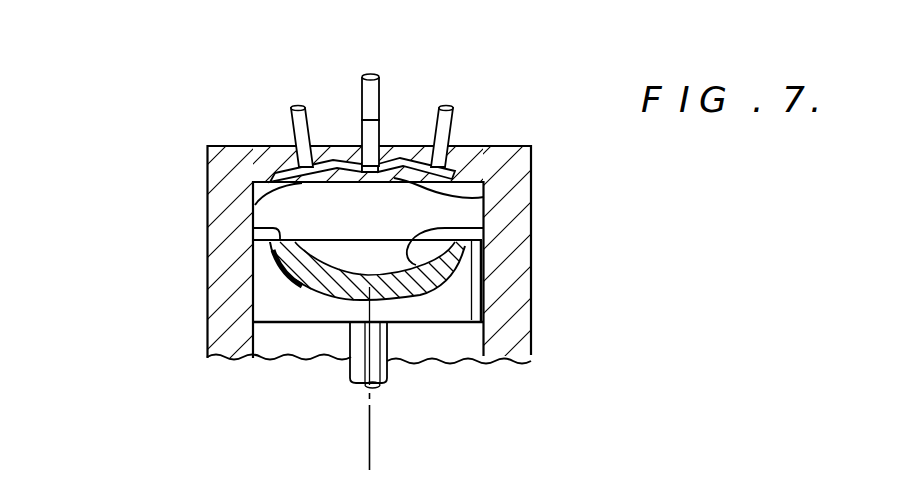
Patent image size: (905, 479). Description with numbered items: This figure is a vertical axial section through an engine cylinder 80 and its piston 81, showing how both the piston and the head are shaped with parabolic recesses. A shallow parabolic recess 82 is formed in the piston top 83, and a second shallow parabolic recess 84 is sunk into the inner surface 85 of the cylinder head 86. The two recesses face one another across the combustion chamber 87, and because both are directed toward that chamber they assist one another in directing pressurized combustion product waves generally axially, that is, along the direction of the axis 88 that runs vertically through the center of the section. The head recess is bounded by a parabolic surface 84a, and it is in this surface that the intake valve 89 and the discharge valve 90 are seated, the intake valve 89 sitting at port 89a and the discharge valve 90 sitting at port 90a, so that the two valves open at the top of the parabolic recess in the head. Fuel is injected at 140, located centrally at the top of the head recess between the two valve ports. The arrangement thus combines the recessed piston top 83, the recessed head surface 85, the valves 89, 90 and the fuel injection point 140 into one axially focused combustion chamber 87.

The cylinder 80 is at (206, 283).
The piston 81 is at (314, 314).
The shallow parabolic recess 82 is at (484, 229).
The piston top 83 is at (254, 224).
The shallow parabolic recess 84 is at (400, 185).
The parabolic surface 84a is at (381, 163).
The inner surface 85 is at (256, 195).
The cylinder head 86 is at (264, 146).
The combustion chamber 87 is at (367, 221).
The axis 88 is at (372, 440).
The intake valve 89 is at (256, 206).
The port 89a is at (326, 145).
The discharge valve 90 is at (484, 197).
The port 90a is at (470, 163).
The fuel injection location 140 is at (342, 100).